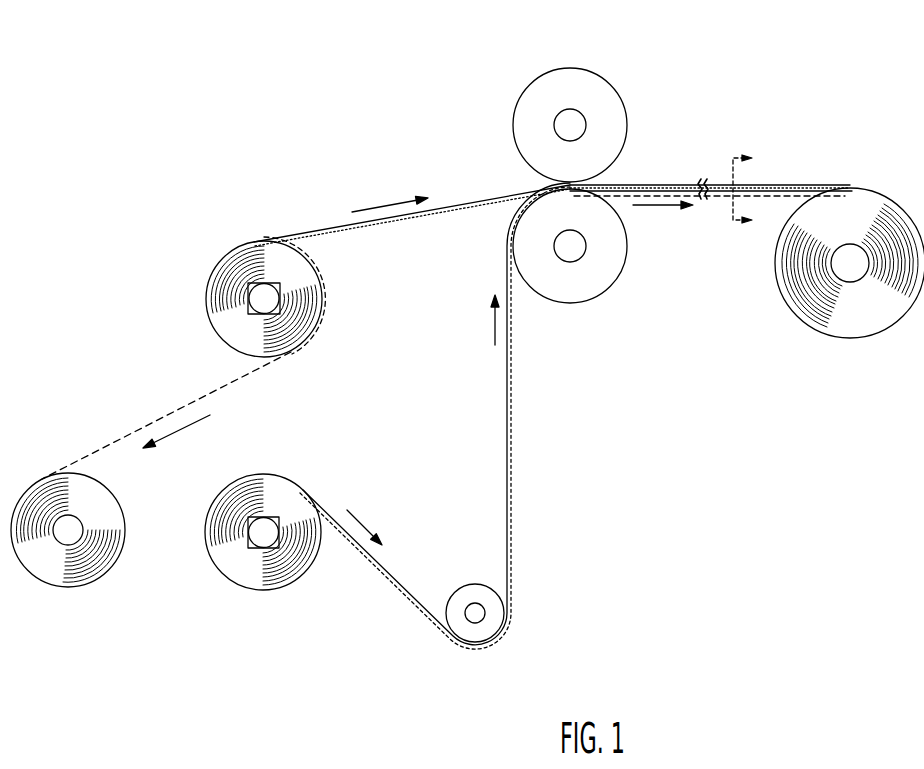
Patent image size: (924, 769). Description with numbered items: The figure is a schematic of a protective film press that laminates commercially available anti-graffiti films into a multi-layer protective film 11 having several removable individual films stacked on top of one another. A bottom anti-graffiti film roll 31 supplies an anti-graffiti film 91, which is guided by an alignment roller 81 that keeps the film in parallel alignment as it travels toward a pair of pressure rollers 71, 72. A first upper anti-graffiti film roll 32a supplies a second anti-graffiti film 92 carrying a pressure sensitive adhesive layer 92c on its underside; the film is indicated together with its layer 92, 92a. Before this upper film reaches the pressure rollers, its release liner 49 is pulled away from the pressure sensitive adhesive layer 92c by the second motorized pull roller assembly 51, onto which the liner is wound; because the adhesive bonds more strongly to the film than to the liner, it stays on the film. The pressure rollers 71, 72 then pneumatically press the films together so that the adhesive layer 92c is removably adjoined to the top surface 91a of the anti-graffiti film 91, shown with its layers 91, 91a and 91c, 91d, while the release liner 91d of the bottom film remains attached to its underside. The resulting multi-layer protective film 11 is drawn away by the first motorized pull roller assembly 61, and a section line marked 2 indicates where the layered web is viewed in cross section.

The multi-layer protective film 11 is at (673, 183).
The section line for FIG. 2 is at (753, 188).
The bottom anti-graffiti film roll 31 is at (238, 572).
The first upper anti-graffiti film roll 32a is at (222, 298).
The release liner 49 is at (130, 435).
The second motorized pull roller assembly 51 is at (110, 587).
The first motorized pull roller assembly 61 is at (787, 330).
The pressure roller 71 is at (572, 297).
The pressure roller 72 is at (570, 77).
The alignment roller 81 is at (490, 613).
The anti-graffiti film 91 is at (488, 416).
The top surface 91a is at (488, 416).
The first web adhesive layer 91c is at (488, 418).
The release liner 91d is at (513, 462).
The anti-graffiti film 92 is at (412, 231).
The second web substrate layer 92a is at (412, 231).
The pressure sensitive adhesive layer 92c is at (432, 212).